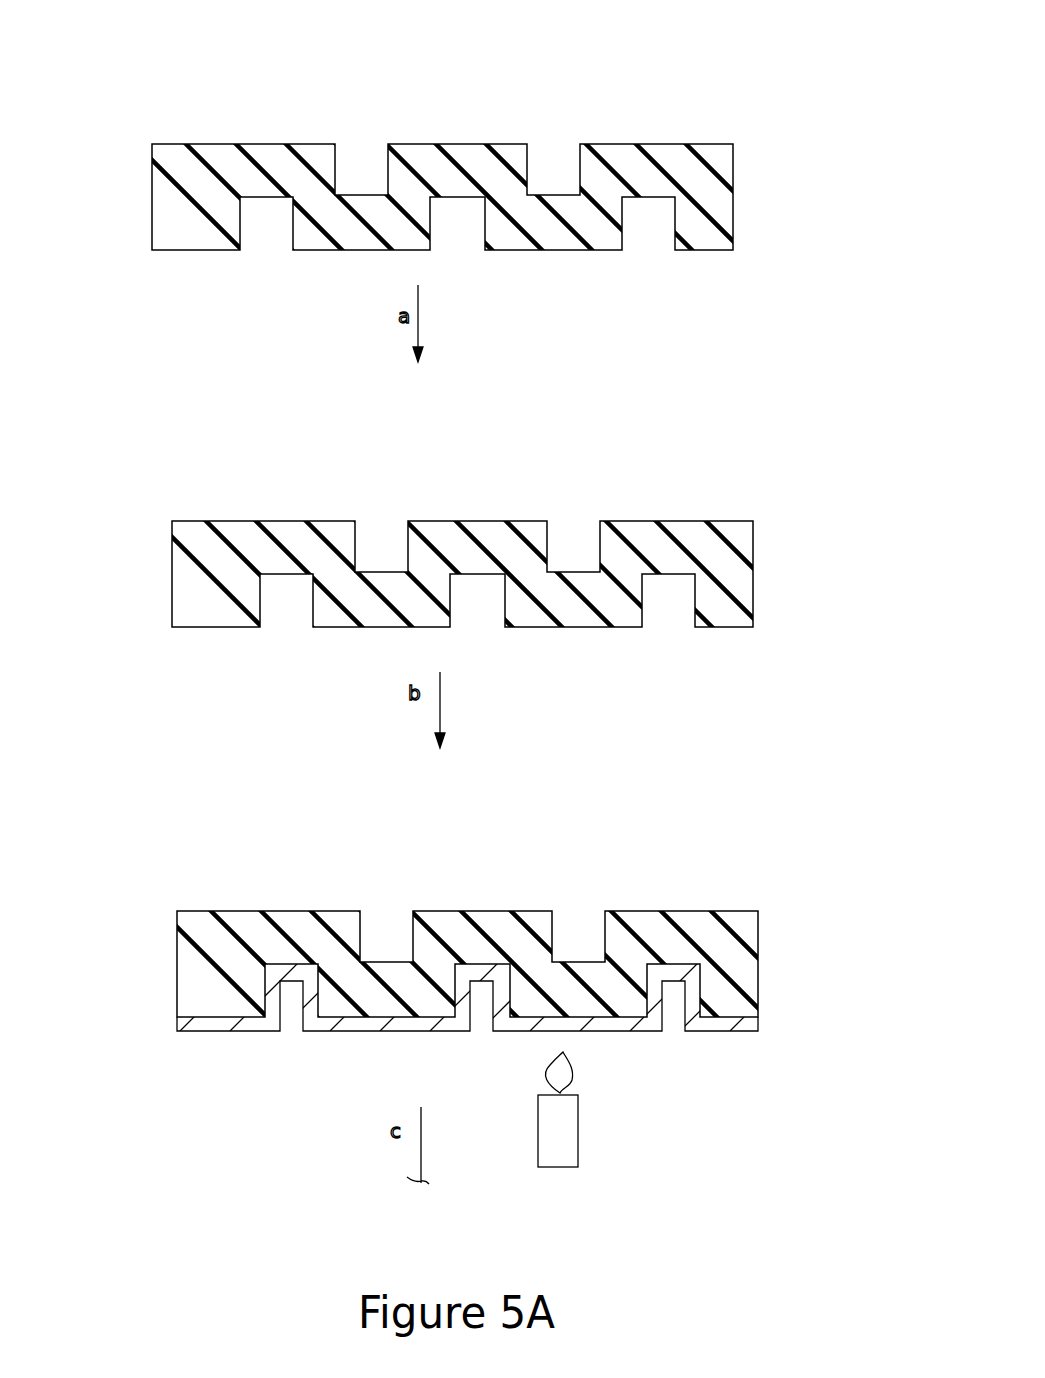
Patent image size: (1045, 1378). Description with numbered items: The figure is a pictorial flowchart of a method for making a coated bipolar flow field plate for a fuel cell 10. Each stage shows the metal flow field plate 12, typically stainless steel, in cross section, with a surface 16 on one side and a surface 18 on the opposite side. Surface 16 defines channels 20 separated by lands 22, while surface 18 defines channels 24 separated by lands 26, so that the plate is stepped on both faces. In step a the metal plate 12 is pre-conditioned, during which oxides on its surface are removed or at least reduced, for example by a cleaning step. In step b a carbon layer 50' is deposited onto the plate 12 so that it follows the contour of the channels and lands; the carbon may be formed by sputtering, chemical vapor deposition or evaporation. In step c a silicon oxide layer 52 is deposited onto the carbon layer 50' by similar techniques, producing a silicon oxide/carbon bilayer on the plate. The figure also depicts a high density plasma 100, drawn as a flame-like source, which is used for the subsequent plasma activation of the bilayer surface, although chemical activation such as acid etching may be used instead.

The fuel cell 10 is at (711, 441).
The flow field plate 12 is at (503, 546).
The surface 16 is at (317, 513).
The surface 18 is at (316, 527).
The channels 20 is at (460, 526).
The lands 22 is at (392, 533).
The channels 24 is at (481, 478).
The lands 26 is at (431, 461).
The carbon layer 50' is at (454, 967).
The silicon oxide layer 52 is at (677, 981).
The high density plasma 100 is at (578, 1132).